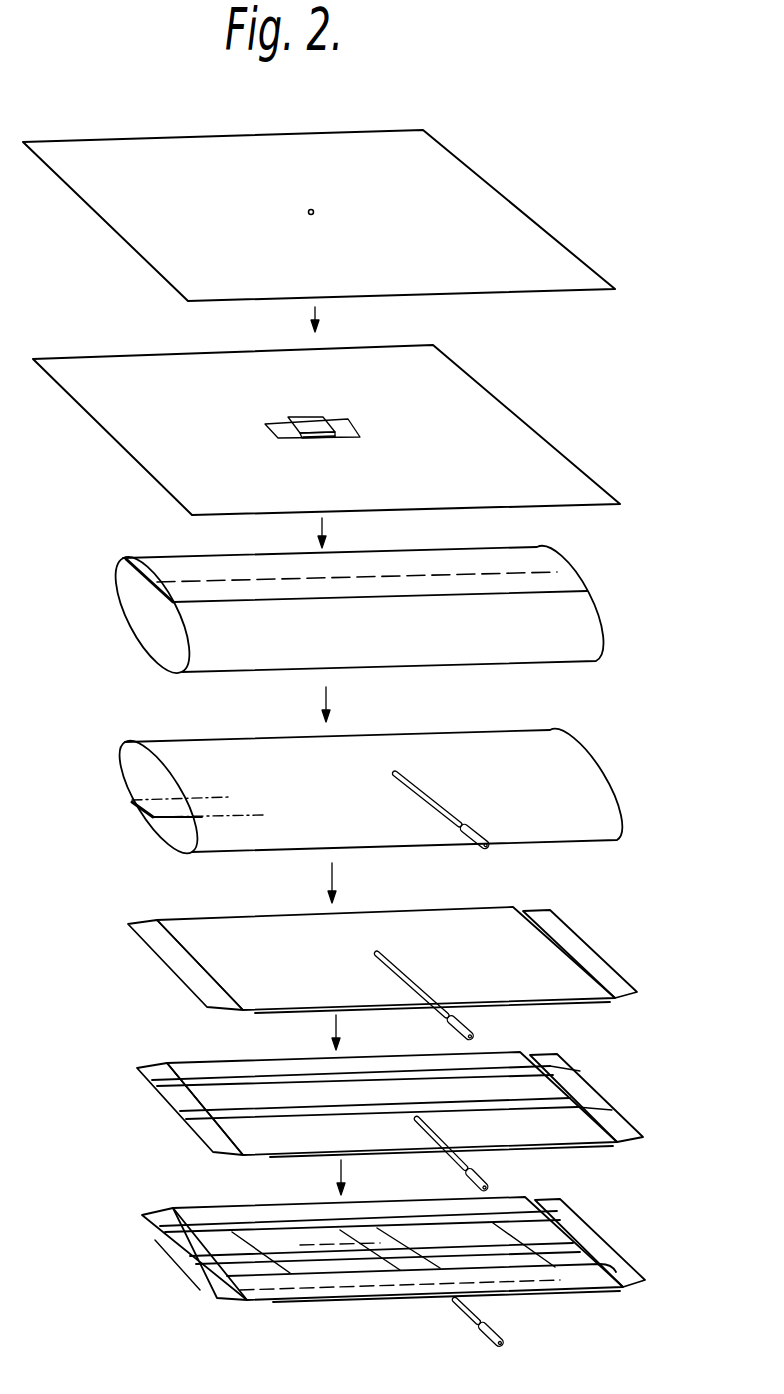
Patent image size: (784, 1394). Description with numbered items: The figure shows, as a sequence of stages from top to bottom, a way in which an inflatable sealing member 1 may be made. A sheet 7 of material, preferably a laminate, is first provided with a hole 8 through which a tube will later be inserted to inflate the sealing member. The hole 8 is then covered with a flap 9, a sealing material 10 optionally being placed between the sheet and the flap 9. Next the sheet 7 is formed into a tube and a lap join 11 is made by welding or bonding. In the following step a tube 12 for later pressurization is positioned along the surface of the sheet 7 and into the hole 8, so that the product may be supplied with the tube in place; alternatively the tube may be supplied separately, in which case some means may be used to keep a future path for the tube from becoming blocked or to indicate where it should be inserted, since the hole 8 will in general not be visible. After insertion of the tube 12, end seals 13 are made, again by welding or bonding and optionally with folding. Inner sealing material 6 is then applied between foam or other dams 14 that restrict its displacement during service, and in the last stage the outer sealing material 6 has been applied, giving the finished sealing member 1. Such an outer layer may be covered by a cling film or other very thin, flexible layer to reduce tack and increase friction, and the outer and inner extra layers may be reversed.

The sealing member 1 is at (137, 1254).
The sealing material 6 is at (183, 1102).
The sheet 7 is at (497, 213).
The hole 8 is at (307, 212).
The flap 9 is at (352, 427).
The sealing material 10 is at (323, 438).
The lap join 11 is at (565, 578).
The tube 12 is at (437, 800).
The end seals 13 is at (183, 967).
The dams 14 is at (560, 1077).